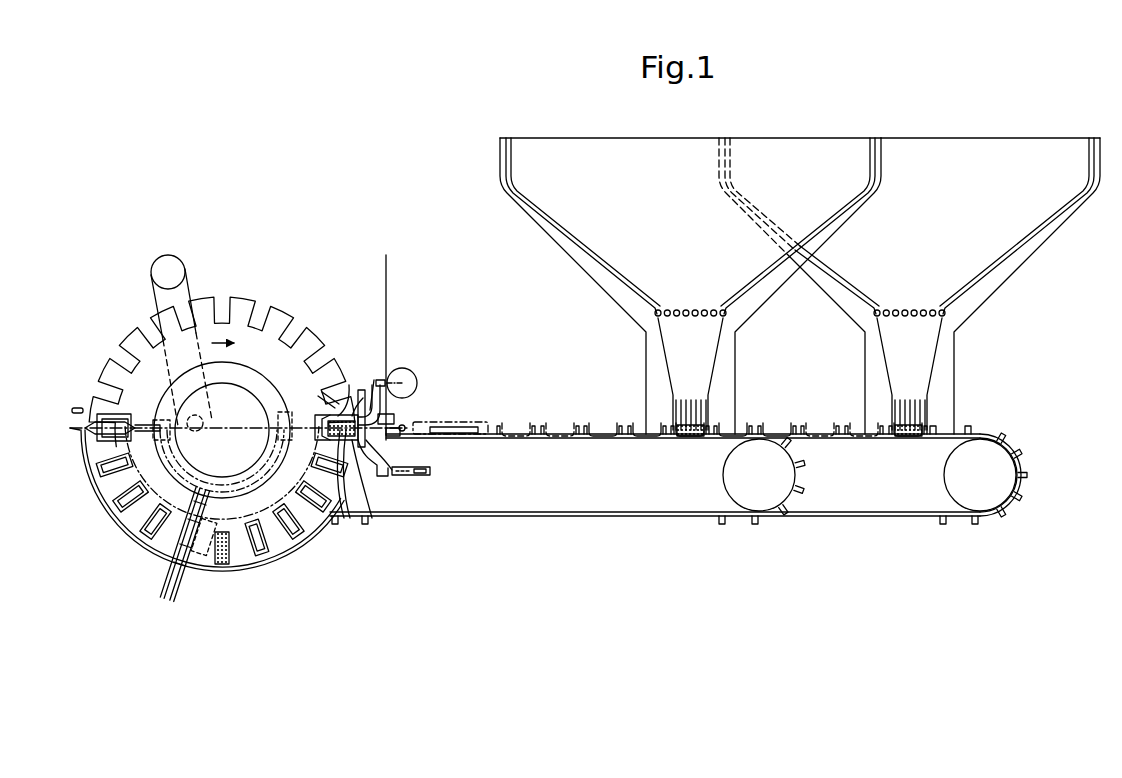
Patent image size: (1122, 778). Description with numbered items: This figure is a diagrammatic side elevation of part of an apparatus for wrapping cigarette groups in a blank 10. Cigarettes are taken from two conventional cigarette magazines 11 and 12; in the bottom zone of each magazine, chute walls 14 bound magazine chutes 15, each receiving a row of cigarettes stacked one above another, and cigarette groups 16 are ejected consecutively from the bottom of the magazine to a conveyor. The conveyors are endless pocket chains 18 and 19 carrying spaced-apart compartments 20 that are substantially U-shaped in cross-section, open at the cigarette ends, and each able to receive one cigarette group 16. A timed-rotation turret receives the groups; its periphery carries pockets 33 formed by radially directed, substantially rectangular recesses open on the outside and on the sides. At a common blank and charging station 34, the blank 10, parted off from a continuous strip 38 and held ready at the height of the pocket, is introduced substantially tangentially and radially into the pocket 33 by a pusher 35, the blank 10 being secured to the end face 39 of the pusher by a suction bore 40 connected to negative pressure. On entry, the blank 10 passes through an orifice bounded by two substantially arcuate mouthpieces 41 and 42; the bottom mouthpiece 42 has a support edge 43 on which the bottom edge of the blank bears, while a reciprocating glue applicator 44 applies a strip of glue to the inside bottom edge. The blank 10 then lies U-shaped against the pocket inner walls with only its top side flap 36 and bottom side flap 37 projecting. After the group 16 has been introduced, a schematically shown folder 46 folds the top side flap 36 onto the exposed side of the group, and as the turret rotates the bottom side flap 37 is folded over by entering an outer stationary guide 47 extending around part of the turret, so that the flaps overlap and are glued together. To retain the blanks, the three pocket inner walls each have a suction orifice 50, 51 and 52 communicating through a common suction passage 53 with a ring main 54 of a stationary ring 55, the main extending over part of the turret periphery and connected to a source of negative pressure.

The blank 10 is at (385, 413).
The cigarette magazine 11 is at (607, 309).
The cigarette magazine 12 is at (837, 309).
The chute wall 14 is at (706, 403).
The magazine chute 15 is at (708, 418).
The cigarette group 16 is at (689, 442).
The endless pocket chain 18 is at (528, 528).
The endless pocket chain 19 is at (675, 507).
The compartment 20 is at (1026, 470).
The pocket 33 is at (262, 308).
The blank and charging station 34 is at (415, 367).
The pusher 35 is at (455, 424).
The top side flap 36 is at (363, 398).
The bottom side flap 37 is at (370, 472).
The continuous strip 38 is at (387, 294).
The end face 39 is at (392, 436).
The suction bore 40 is at (397, 426).
The mouthpiece 41 is at (374, 380).
The bottom mouthpiece 42 is at (378, 479).
The support edge 43 is at (392, 476).
The glue applicator 44 is at (432, 472).
The folder 46 is at (351, 384).
The outer stationary guide 47 is at (311, 540).
The suction orifice 50 is at (322, 395).
The suction orifice 51 is at (347, 470).
The suction orifice 52 is at (290, 441).
The suction passage 53 is at (306, 421).
The ring main 54 is at (232, 490).
The stationary ring 55 is at (188, 469).